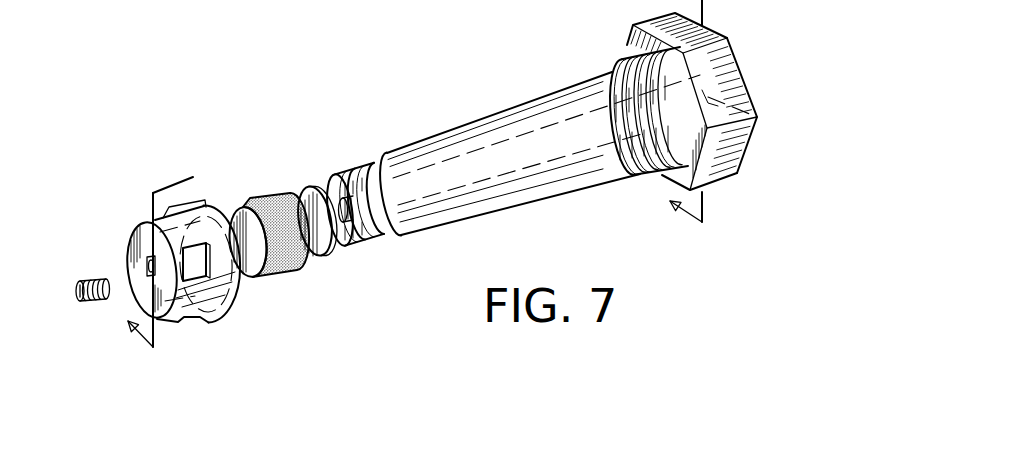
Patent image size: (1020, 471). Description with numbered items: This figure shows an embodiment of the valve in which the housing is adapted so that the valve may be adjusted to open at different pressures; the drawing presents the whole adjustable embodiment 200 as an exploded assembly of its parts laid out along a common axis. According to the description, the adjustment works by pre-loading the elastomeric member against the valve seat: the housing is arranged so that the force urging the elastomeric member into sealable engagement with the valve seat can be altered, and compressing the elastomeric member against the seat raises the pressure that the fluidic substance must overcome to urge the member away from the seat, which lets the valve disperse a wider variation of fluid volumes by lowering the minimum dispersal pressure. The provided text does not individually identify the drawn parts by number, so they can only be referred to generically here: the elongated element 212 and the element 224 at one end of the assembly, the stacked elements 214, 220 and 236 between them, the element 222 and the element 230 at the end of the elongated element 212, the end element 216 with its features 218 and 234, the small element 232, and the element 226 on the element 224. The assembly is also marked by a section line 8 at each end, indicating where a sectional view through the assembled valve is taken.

The valve assembly 200 is at (279, 88).
The tubular body 212 is at (552, 104).
The filter element 214 is at (293, 213).
The end cap 216 is at (150, 287).
The key and keyway 218 is at (173, 217).
The washer 220 is at (323, 257).
The threaded neck 222 is at (330, 177).
The hex nut 224 is at (718, 53).
The nut flat 226 is at (757, 117).
The hub 230 is at (340, 242).
The set screw 232 is at (78, 288).
The cap flange 234 is at (126, 285).
The disc 236 is at (267, 270).
The section line 8- 8 is at (407, 173).